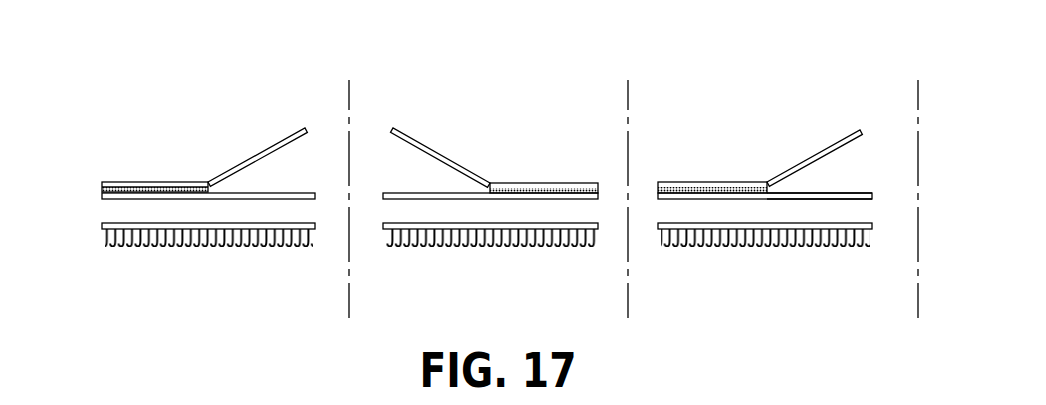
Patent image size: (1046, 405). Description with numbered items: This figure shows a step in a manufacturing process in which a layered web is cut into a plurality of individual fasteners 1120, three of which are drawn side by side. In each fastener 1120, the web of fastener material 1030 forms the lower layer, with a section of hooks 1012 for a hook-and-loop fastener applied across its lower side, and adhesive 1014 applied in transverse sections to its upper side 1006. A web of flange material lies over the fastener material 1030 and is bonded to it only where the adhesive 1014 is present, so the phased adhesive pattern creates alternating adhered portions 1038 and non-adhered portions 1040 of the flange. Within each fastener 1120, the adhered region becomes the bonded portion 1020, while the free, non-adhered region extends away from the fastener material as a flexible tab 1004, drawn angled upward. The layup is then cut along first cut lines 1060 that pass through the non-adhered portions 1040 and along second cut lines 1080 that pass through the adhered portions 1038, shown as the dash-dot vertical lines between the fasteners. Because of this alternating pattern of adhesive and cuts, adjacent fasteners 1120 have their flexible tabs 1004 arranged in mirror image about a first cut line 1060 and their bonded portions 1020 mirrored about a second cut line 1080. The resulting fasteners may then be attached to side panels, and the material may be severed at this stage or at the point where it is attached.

The flexible tab 1004 is at (243, 162).
The upper side 1006 is at (840, 193).
The section of hooks 1012 is at (765, 247).
The adhesive 1014 is at (103, 190).
The bonded portion 1020 is at (152, 187).
The web of fastener material 1030 is at (857, 199).
The adhered portion 1038 is at (147, 193).
The non-adhered portion 1040 is at (270, 195).
The first cut line 1060 is at (628, 98).
The second cut line 1080 is at (349, 100).
The fastener 1120 is at (175, 102).